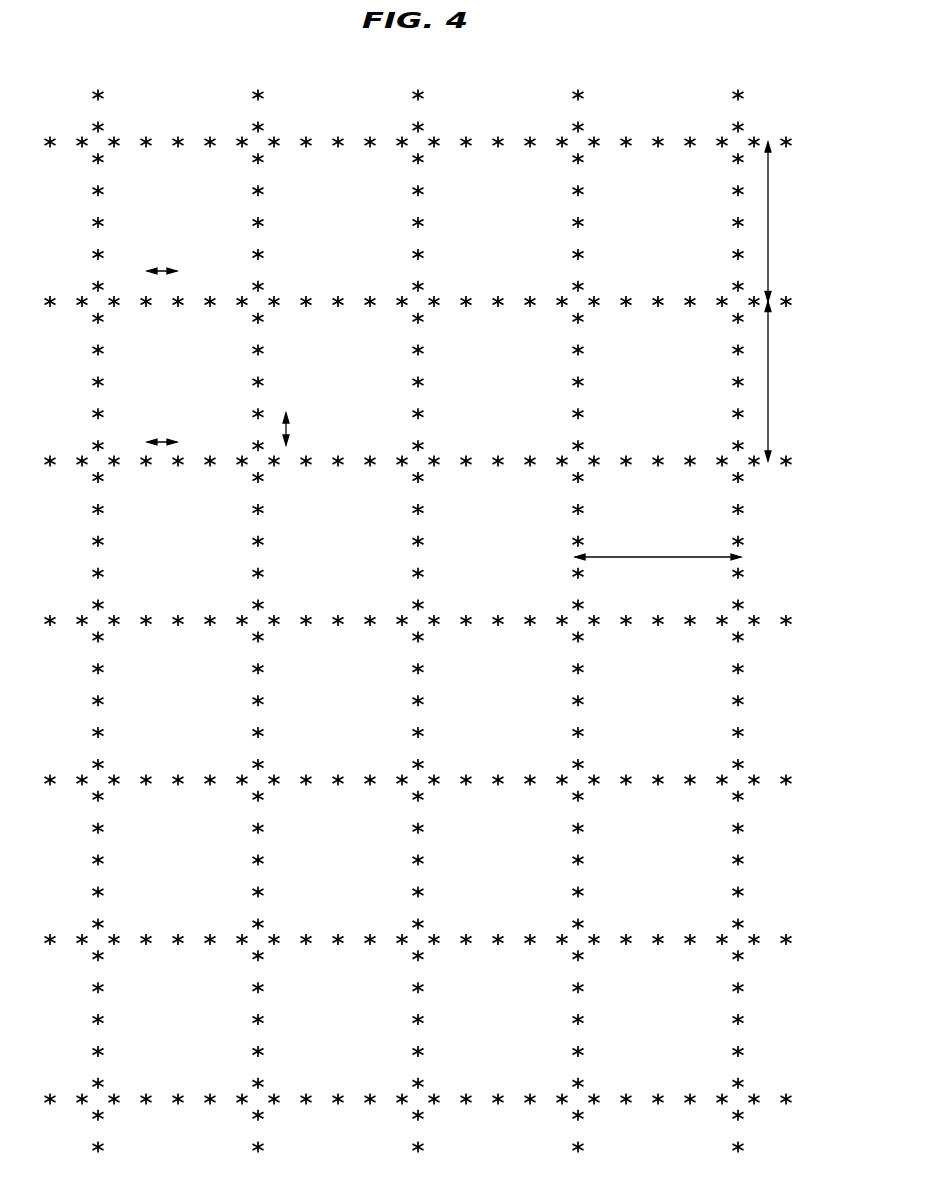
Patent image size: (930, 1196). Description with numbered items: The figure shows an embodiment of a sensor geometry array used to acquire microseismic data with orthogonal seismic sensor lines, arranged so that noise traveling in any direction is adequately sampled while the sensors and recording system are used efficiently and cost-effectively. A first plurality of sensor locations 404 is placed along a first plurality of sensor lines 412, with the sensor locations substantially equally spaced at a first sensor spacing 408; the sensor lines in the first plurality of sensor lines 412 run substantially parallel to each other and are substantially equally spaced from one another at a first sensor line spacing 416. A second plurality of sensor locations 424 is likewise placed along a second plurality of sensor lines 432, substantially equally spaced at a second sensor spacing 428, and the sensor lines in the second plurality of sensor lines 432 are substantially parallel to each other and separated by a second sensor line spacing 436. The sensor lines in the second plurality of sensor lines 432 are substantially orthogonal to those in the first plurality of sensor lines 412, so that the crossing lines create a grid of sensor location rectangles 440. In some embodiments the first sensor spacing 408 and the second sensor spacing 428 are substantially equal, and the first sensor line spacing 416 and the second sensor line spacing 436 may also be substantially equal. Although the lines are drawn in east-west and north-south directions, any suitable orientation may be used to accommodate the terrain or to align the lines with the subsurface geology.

The first plurality of sensor locations 404 is at (419, 254).
The first sensor spacing 408 is at (162, 344).
The first plurality of sensor lines 412 is at (411, 599).
The first sensor line spacing 416 is at (785, 301).
The second plurality of sensor locations 424 is at (295, 462).
The second sensor spacing 428 is at (303, 429).
The second plurality of sensor lines 432 is at (447, 613).
The second sensor line spacing 436 is at (658, 545).
The sensor location rectangles 440 is at (500, 859).